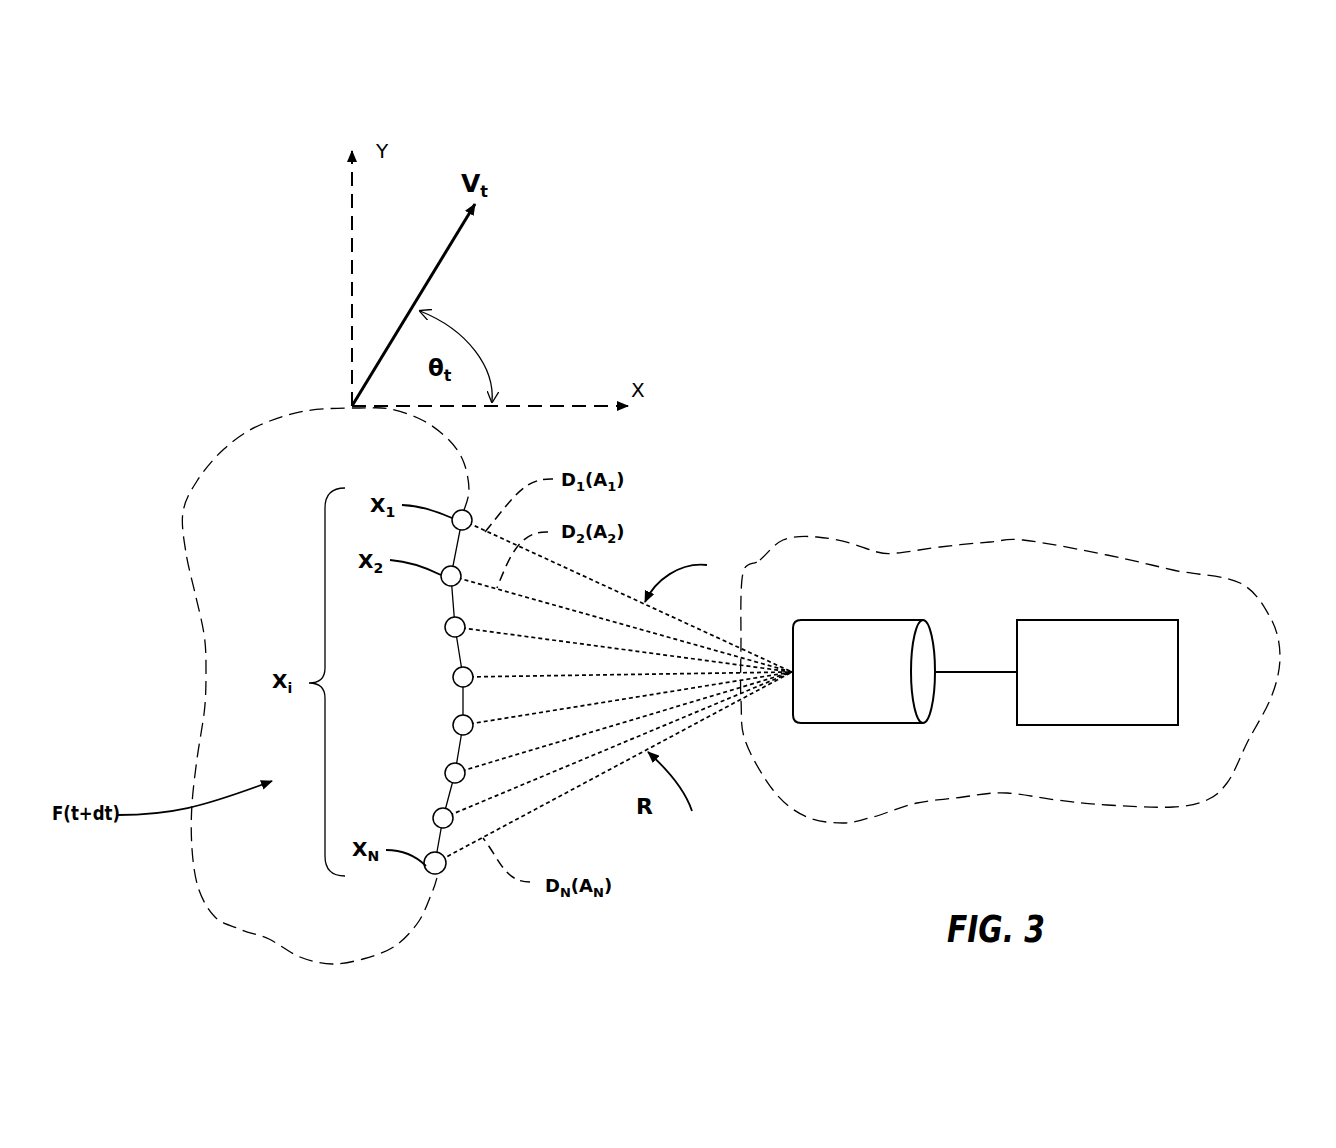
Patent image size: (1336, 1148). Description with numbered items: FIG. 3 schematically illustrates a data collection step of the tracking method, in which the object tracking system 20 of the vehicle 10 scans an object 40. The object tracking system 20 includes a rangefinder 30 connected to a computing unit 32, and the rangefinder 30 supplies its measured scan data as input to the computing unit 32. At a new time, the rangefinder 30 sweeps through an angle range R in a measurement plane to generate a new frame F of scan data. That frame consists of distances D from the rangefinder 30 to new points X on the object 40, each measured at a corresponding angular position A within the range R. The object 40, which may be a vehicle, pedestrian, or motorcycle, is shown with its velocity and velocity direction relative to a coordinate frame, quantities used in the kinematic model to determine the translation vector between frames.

The vehicle 10 is at (897, 553).
The object tracking system 20 is at (1015, 633).
The rangefinder 30 is at (864, 671).
The computing unit 32 is at (1097, 672).
The object 40 is at (325, 686).